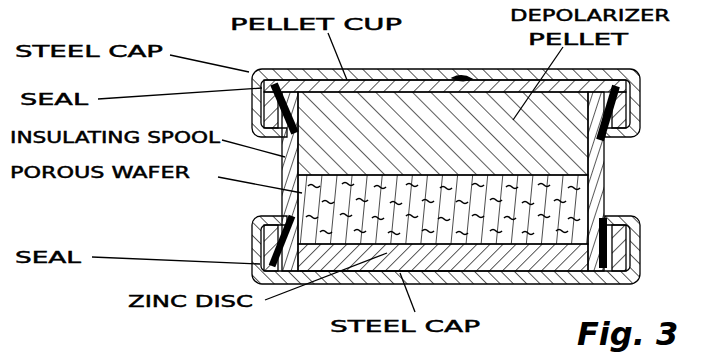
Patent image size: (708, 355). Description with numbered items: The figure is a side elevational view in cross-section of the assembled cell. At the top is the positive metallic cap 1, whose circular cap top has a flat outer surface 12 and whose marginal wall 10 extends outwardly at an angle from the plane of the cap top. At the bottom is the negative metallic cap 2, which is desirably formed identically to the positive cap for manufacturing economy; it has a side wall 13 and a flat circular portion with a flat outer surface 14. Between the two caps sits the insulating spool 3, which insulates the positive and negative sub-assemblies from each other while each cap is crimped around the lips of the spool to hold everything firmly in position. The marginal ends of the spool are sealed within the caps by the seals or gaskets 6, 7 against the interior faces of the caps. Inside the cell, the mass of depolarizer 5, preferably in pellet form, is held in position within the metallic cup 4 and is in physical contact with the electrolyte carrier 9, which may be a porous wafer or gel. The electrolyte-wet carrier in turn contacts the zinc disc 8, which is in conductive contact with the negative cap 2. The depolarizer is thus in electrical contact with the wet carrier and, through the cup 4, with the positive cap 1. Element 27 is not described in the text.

The positive metallic cap 1 is at (498, 73).
The negative metallic cap 2 is at (612, 283).
The insulating spool 3 is at (583, 190).
The metallic cup 4 is at (580, 79).
The mass of depolarizer 5 is at (613, 153).
The seal 6 is at (630, 268).
The seal 7 is at (632, 88).
The zinc disc 8 is at (530, 258).
The electrolyte carrier 9 is at (560, 218).
The marginal wall 10 is at (637, 106).
The flat outer surface 12 is at (458, 76).
The side wall 13 is at (632, 251).
The flat outer surface 14 is at (464, 283).
The pellet cup flange 27 is at (460, 73).